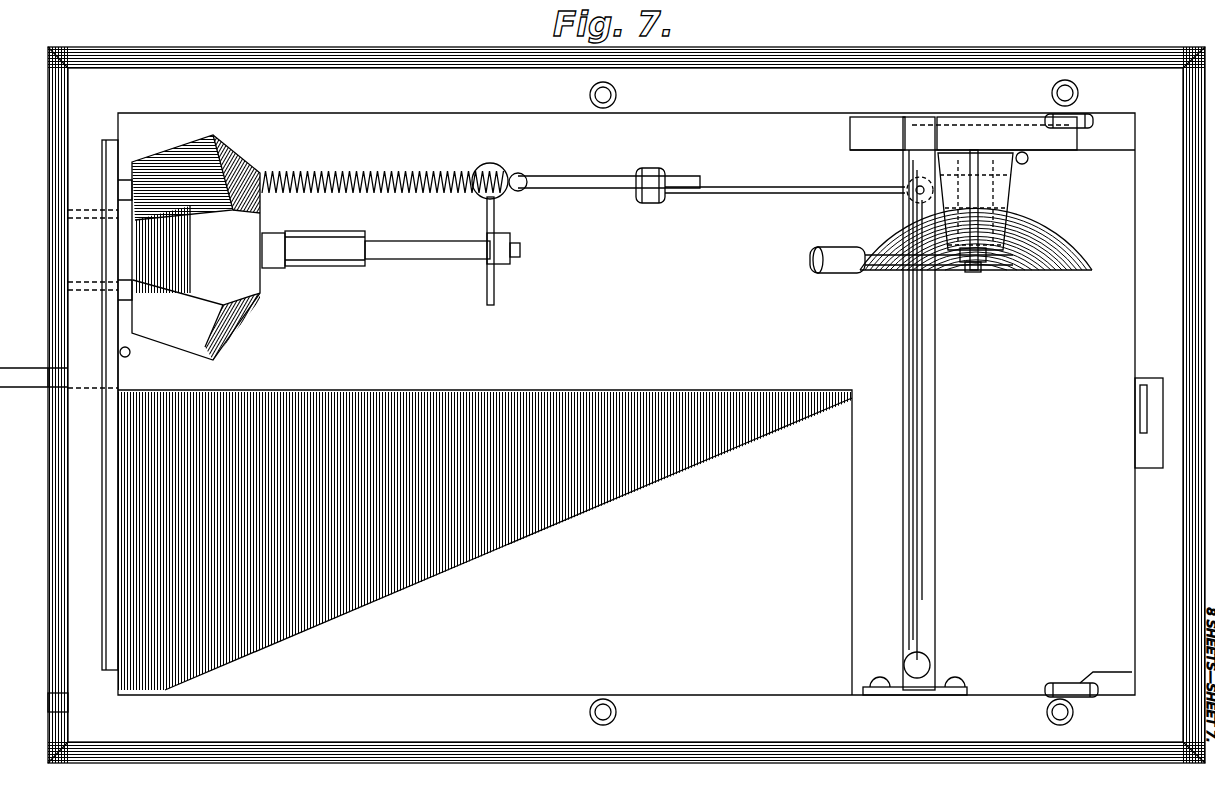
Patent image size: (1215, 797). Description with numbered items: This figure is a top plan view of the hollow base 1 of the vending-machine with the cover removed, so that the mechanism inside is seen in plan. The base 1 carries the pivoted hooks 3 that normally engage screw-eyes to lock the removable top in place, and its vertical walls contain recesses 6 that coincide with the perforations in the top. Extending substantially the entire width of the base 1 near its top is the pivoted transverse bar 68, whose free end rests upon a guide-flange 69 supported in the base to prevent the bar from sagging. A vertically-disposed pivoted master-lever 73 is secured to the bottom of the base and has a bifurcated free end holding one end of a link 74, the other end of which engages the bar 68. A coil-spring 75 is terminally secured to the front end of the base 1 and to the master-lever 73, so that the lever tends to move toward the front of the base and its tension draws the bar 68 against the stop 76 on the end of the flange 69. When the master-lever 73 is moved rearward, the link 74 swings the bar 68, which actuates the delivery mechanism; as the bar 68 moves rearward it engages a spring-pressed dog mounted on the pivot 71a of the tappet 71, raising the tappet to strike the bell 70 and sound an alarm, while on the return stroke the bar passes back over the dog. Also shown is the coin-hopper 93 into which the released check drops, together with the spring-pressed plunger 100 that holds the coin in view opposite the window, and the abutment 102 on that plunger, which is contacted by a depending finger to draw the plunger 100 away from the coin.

The base 1 is at (293, 49).
The hooks 3 is at (1060, 127).
The recesses 6 is at (612, 95).
The pivoted bar 68 is at (920, 448).
The guide-flange 69 is at (1010, 130).
The bell 70 is at (1032, 270).
The tappet 71 is at (897, 266).
The pivot 71a is at (963, 272).
The master-lever 73 is at (580, 189).
The link 74 is at (778, 194).
The coil-spring 75 is at (355, 180).
The stop 76 is at (900, 126).
The coin-hopper 93 is at (189, 247).
The spring-pressed plunger 100 is at (384, 262).
The abutment 102 is at (487, 283).